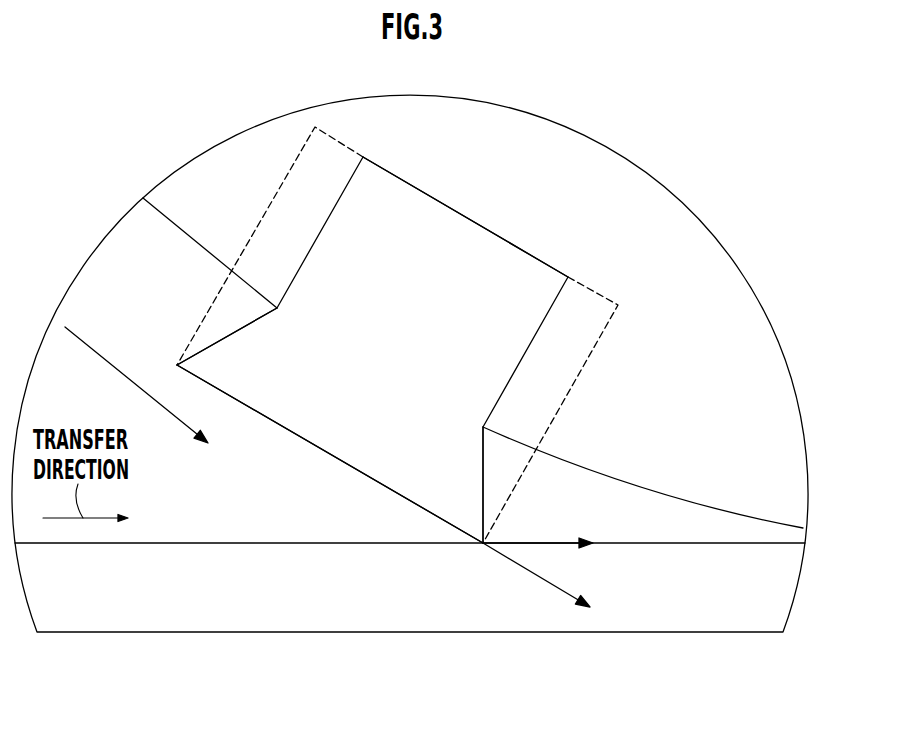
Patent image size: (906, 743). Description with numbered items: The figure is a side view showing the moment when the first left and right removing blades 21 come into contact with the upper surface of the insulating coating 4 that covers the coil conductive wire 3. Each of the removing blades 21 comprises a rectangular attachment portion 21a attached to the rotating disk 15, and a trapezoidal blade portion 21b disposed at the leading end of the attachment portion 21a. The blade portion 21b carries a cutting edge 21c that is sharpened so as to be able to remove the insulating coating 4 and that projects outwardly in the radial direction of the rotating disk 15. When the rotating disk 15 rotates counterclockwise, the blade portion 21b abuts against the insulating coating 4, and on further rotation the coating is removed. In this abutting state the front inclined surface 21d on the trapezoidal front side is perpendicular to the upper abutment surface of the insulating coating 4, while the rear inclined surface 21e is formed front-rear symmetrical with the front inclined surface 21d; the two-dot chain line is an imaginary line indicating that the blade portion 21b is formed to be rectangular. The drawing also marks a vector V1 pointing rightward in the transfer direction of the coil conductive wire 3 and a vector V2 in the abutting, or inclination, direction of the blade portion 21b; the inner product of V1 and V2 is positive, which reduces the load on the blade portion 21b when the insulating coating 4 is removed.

The coil conductive wire 3 is at (172, 543).
The insulating coating 4 is at (285, 553).
The rotating disk 15 is at (183, 212).
The first left and right removing blades 21 is at (300, 440).
The rectangular attachment portion 21a is at (458, 228).
The trapezoidal blade portion 21b is at (370, 462).
The cutting edge 21c is at (483, 546).
The front inclined surface 21d is at (485, 472).
The rear inclined surface 21e is at (215, 343).
The vector in the transfer direction V1 is at (533, 543).
The vector in the abutting direction V2 is at (530, 571).